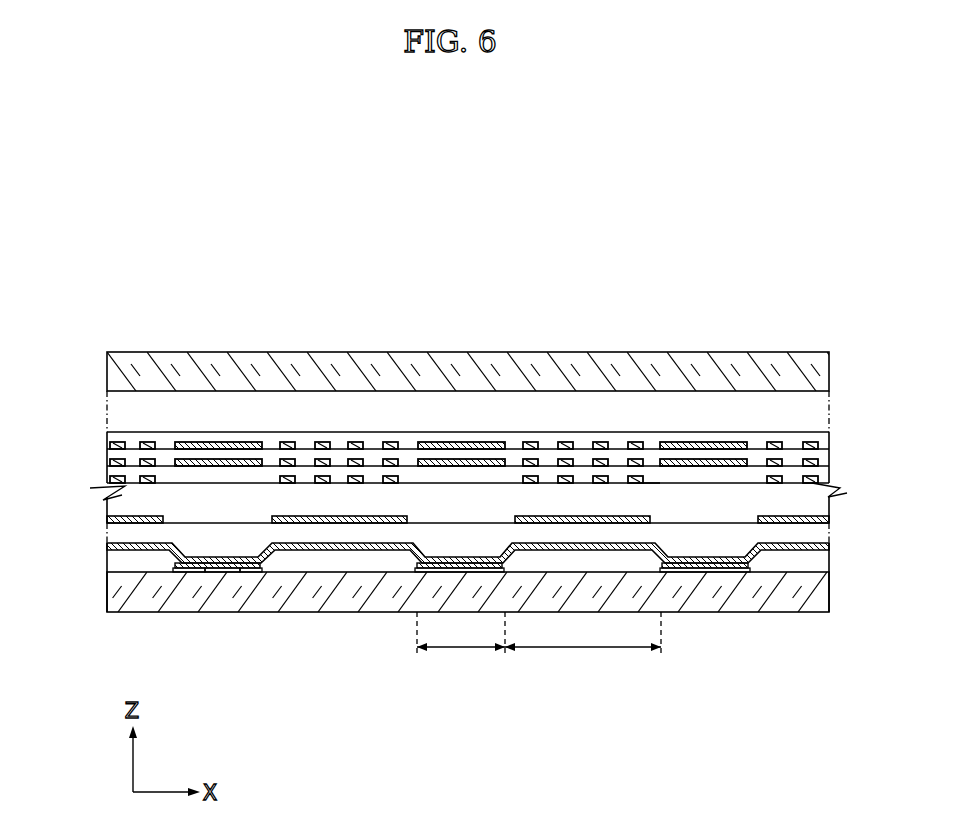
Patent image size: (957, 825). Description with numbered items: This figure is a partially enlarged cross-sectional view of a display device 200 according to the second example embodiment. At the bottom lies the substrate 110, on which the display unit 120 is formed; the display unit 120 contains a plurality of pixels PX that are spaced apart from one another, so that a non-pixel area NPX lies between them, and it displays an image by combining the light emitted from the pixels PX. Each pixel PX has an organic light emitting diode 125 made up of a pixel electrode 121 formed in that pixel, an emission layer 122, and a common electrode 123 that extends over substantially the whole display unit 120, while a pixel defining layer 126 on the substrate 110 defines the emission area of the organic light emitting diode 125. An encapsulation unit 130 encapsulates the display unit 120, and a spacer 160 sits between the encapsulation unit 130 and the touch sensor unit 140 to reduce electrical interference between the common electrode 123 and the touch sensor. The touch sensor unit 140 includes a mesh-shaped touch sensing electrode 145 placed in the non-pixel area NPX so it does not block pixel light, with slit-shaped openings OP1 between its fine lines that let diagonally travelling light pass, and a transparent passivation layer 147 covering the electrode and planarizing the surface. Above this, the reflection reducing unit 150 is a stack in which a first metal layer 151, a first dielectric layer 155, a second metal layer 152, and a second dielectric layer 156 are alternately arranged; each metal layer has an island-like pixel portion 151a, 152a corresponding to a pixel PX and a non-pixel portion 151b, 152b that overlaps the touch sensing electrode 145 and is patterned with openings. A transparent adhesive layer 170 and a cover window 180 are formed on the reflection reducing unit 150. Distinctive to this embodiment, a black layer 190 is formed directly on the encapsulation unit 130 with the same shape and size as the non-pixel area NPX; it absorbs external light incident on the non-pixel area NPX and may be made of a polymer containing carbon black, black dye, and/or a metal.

The display device 200 is at (460, 240).
The substrate 110 is at (131, 608).
The display unit 120 is at (690, 580).
The pixel electrode 121 is at (190, 573).
The emission layer 122 is at (215, 573).
The common electrode 123 is at (495, 619).
The organic light emitting diode 125 is at (454, 640).
The pixel defining layer 126 is at (803, 560).
The encapsulation unit 130 is at (775, 535).
The touch sensor unit 140 is at (539, 368).
The touch sensing electrode 145 is at (635, 476).
The passivation layer 147 is at (653, 472).
The reflection reducing unit 150 is at (438, 368).
The first metal layer 151 is at (254, 361).
The pixel portion 151a is at (227, 460).
The non-pixel portion 151b is at (383, 447).
The second metal layer 152 is at (741, 360).
The pixel portion 152a is at (708, 442).
The non-pixel portion 152b is at (810, 441).
The first dielectric layer 155 is at (133, 457).
The second dielectric layer 156 is at (162, 440).
The spacer 160 is at (733, 514).
The transparent adhesive layer 170 is at (487, 407).
The cover window 180 is at (443, 362).
The black layer 190 is at (395, 524).
The openings OP1 is at (377, 482).
The pixel PX is at (461, 645).
The non-pixel area NPX is at (583, 645).